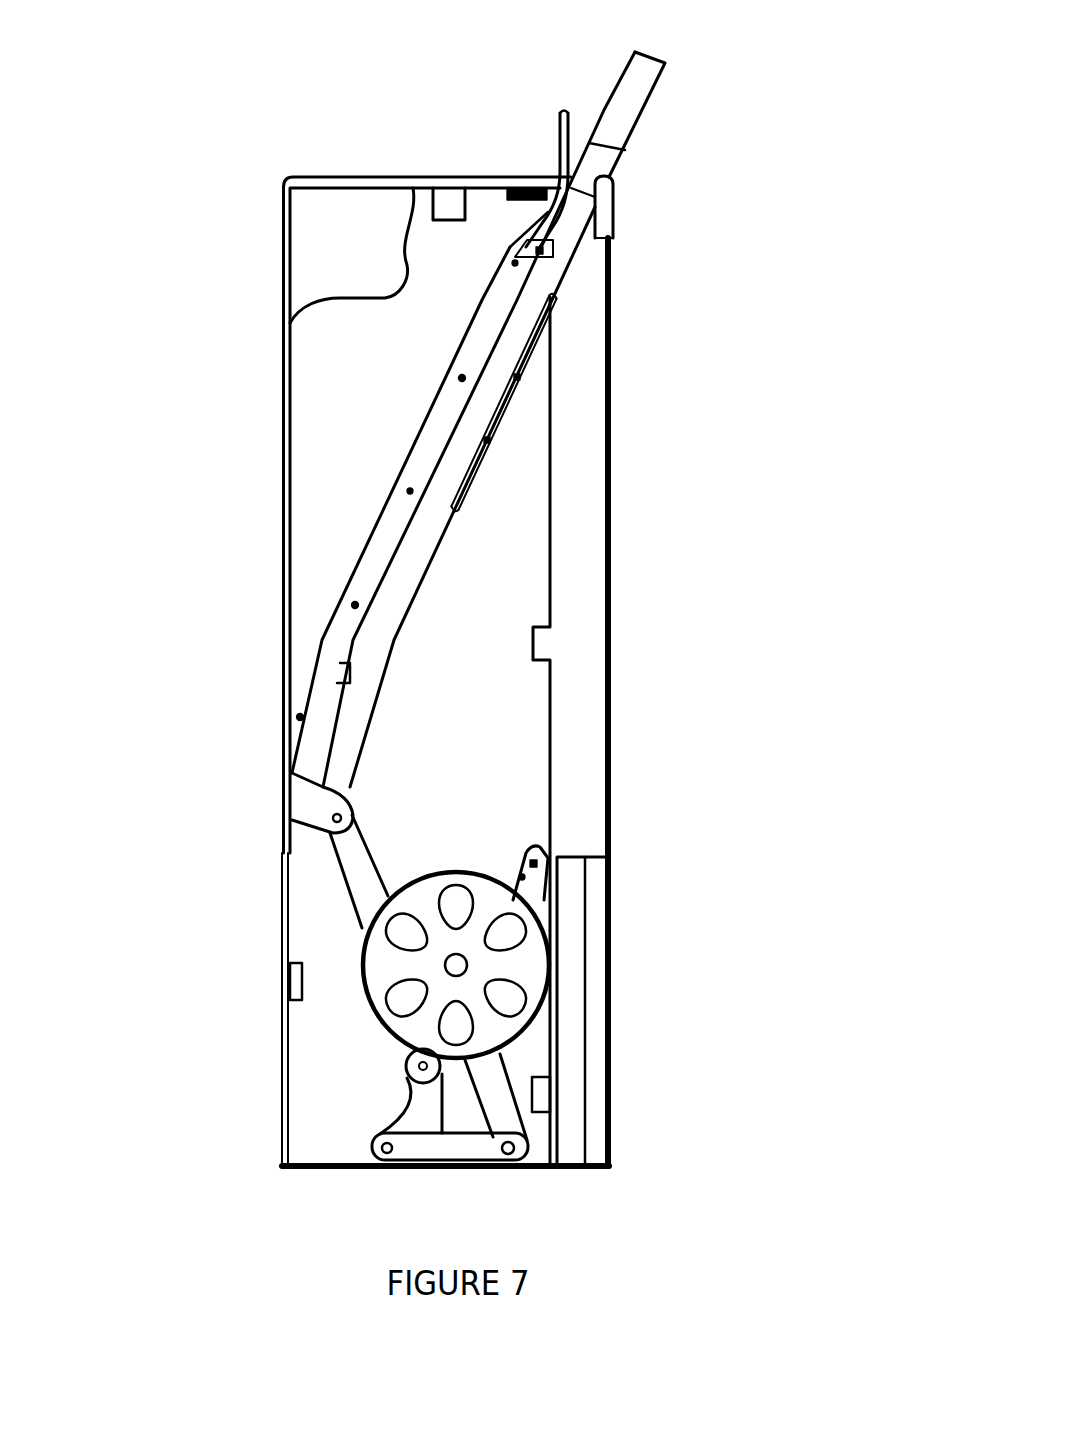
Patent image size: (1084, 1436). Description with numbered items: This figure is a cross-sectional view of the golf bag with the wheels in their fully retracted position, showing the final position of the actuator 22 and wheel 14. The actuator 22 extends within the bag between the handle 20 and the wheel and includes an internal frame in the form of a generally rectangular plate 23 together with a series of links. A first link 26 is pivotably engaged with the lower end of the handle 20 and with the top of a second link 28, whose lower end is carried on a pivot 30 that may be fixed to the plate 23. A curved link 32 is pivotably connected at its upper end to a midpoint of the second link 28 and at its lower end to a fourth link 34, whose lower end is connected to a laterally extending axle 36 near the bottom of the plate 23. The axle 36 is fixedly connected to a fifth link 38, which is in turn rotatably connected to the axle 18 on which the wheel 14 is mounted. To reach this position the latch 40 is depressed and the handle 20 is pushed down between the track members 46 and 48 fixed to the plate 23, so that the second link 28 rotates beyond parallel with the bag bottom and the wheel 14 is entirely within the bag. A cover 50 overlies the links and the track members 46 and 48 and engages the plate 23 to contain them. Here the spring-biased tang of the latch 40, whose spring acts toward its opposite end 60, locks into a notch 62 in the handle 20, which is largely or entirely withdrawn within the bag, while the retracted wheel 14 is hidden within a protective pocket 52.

The retractable wheel 14 is at (387, 965).
The axle 18 is at (455, 967).
The handle 20 is at (637, 88).
The actuator 22 is at (320, 878).
The plate 23 is at (327, 394).
The first link 26 is at (355, 865).
The second link 28 is at (524, 878).
The pivot 30 is at (543, 856).
The curved link 32 is at (442, 1103).
The fourth link 34 is at (427, 1150).
The axle 36 is at (530, 1165).
The fifth link 38 is at (488, 1093).
The latch 40 is at (488, 160).
The track member 46 is at (388, 519).
The track member 48 is at (518, 405).
The cover 50 is at (330, 248).
The protective pocket 52 is at (574, 1020).
The opposite end of the latch 60 is at (562, 125).
The notch 62 is at (340, 668).